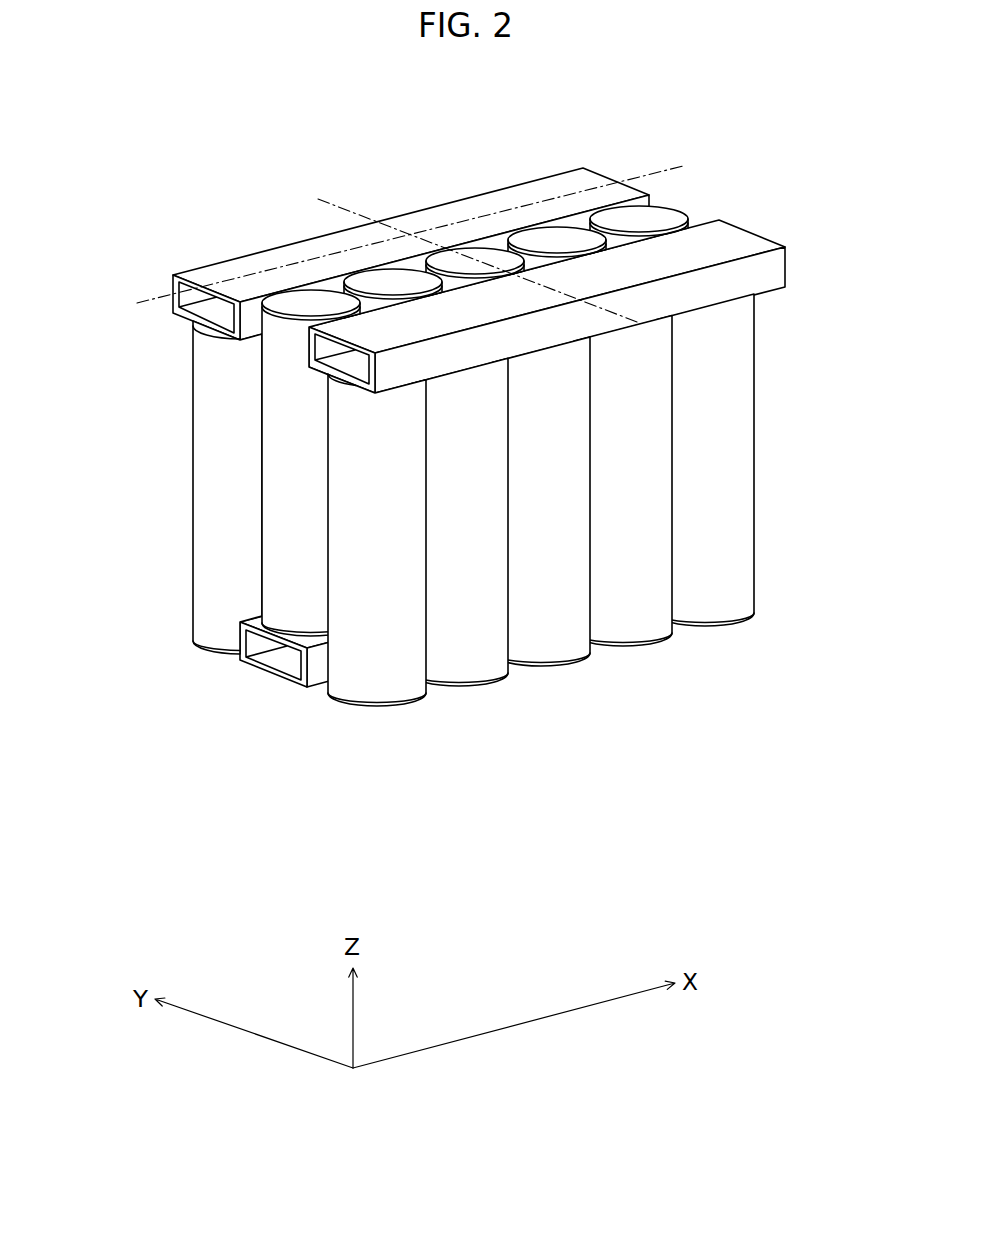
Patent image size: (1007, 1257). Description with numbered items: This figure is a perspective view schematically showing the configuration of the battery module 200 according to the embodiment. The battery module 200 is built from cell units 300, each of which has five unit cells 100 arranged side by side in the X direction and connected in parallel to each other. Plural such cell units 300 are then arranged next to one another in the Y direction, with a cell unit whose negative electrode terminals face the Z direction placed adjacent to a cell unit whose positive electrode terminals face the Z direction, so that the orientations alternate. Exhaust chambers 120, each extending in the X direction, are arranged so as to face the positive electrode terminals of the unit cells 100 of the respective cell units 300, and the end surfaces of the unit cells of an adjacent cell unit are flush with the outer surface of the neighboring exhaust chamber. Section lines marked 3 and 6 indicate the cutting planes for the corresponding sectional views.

The battery module 200 is at (448, 423).
The cell unit 300 is at (448, 451).
The unit cell 100 is at (677, 212).
The exhaust chamber 120 is at (495, 200).
The section line 3- 3 is at (688, 159).
The section line 6- 6 is at (310, 204).